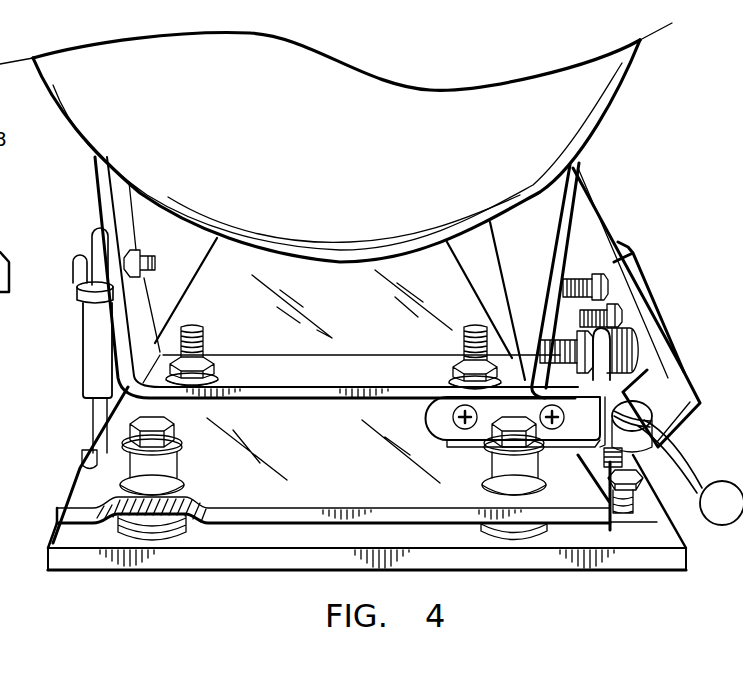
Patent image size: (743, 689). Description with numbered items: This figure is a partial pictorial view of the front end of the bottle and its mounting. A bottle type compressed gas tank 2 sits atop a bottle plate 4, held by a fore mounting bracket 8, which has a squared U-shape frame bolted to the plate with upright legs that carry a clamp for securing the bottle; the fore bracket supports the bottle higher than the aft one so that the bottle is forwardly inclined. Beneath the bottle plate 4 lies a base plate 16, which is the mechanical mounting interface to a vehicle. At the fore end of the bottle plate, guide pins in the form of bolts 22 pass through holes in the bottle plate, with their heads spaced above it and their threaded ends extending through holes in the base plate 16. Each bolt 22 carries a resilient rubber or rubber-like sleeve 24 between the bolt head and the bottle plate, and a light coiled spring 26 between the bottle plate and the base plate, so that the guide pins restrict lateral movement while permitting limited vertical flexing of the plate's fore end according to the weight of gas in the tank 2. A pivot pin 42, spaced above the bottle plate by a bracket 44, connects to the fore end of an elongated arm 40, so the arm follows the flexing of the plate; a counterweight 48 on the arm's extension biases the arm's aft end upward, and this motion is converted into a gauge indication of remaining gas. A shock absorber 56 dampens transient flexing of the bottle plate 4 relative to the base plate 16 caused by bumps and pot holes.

The compressed gas tank 2 is at (345, 163).
The plate 4 is at (250, 525).
The fore mounting bracket 8 is at (98, 210).
The base plate 16 is at (535, 570).
The bolts 22 is at (150, 428).
The resilient sleeve 24 is at (150, 472).
The coiled spring 26 is at (173, 530).
The elongated arm 40 is at (583, 227).
The pivot pin 42 is at (542, 348).
The bracket 44 is at (447, 403).
The counterweight 48 is at (700, 483).
The shock absorber 56 is at (95, 343).